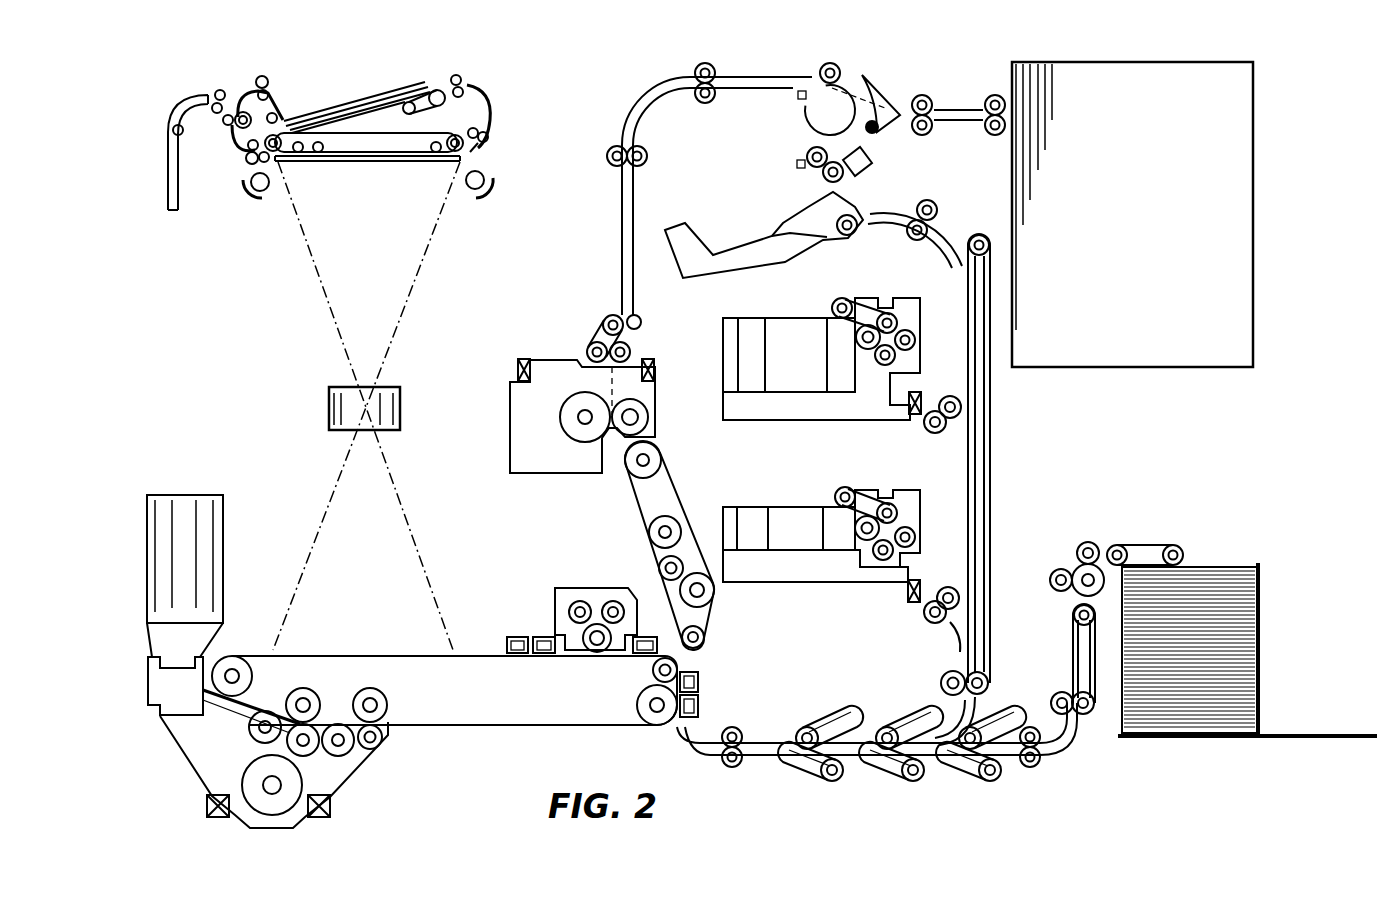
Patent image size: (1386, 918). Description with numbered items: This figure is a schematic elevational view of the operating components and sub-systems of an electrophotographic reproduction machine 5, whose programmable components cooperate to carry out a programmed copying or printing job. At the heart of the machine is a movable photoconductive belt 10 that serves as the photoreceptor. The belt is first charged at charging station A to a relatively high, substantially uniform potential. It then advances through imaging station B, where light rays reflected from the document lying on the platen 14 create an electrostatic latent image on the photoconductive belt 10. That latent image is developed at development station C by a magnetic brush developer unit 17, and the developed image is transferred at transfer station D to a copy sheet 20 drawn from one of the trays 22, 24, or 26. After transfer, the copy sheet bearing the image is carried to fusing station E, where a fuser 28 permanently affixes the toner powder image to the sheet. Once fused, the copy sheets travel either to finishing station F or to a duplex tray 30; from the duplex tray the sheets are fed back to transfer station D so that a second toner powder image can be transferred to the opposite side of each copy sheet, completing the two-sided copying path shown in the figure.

The electrophotographic reproduction machine 5 is at (554, 97).
The photoconductive belt 10 is at (487, 727).
The platen 14 is at (365, 162).
The magnetic brush developer unit 17 is at (378, 748).
The copy sheet 20 is at (1239, 639).
The tray 22 is at (1277, 677).
The tray 24 is at (793, 421).
The tray 26 is at (787, 578).
The fuser 28 is at (483, 379).
The duplex tray 30 is at (762, 243).
The charging station A is at (524, 622).
The imaging station B is at (383, 620).
The development station C is at (368, 797).
The transfer station D is at (719, 688).
The fusing station E is at (549, 344).
The finishing station F is at (1186, 394).